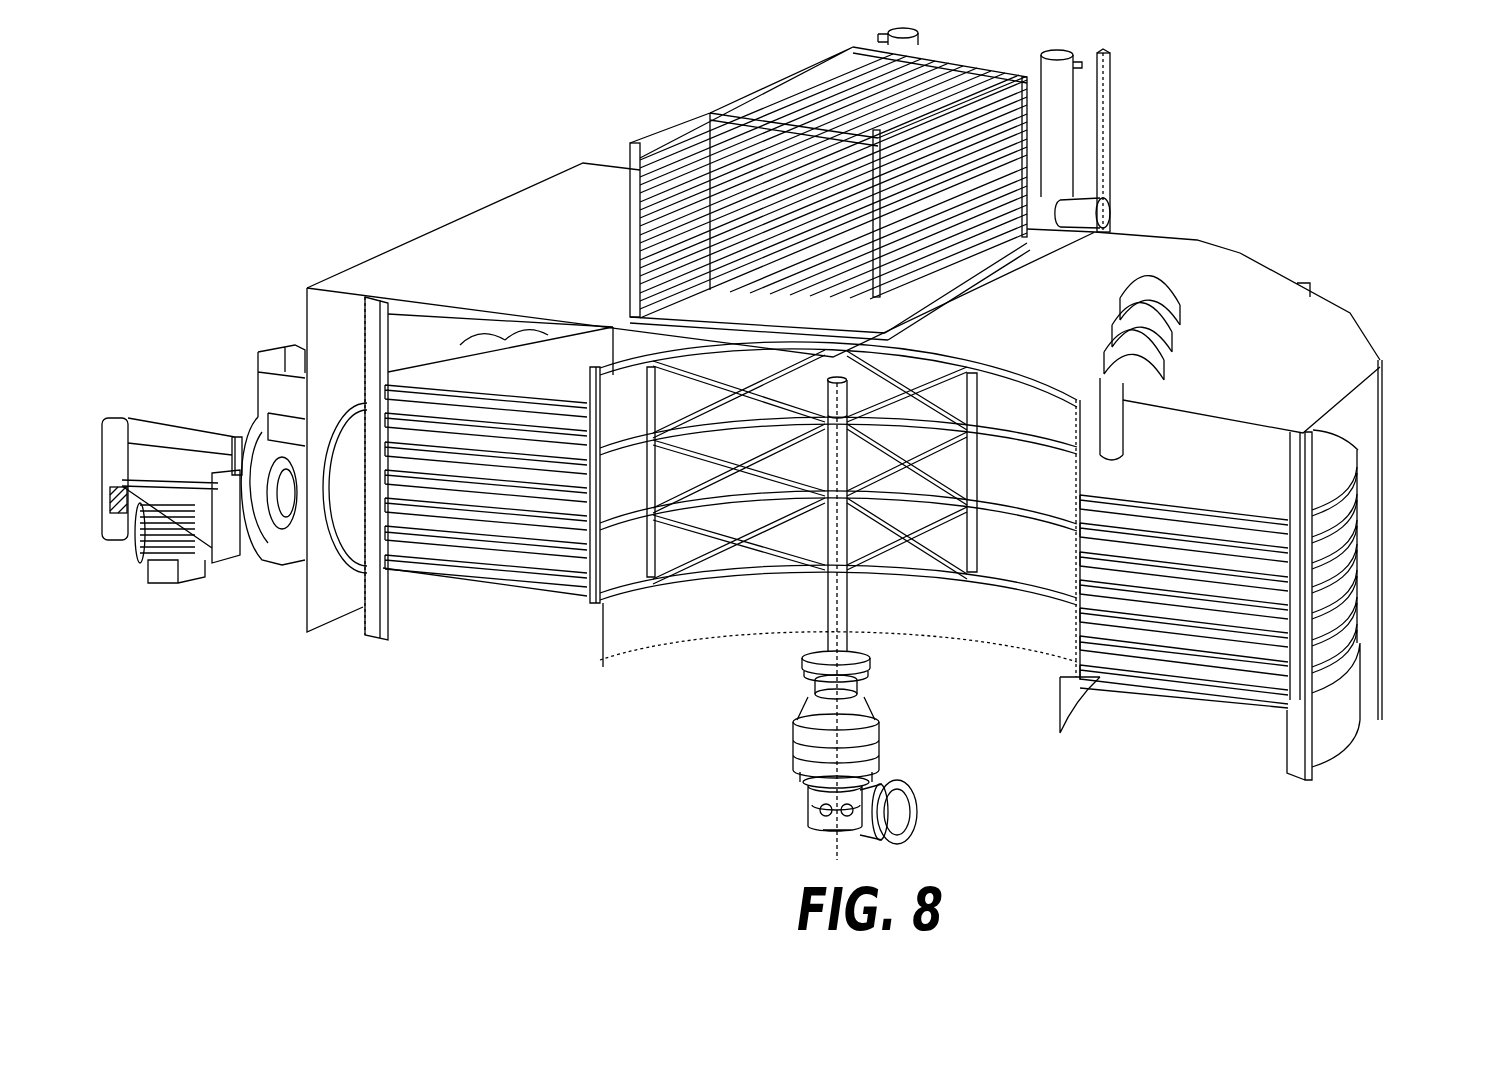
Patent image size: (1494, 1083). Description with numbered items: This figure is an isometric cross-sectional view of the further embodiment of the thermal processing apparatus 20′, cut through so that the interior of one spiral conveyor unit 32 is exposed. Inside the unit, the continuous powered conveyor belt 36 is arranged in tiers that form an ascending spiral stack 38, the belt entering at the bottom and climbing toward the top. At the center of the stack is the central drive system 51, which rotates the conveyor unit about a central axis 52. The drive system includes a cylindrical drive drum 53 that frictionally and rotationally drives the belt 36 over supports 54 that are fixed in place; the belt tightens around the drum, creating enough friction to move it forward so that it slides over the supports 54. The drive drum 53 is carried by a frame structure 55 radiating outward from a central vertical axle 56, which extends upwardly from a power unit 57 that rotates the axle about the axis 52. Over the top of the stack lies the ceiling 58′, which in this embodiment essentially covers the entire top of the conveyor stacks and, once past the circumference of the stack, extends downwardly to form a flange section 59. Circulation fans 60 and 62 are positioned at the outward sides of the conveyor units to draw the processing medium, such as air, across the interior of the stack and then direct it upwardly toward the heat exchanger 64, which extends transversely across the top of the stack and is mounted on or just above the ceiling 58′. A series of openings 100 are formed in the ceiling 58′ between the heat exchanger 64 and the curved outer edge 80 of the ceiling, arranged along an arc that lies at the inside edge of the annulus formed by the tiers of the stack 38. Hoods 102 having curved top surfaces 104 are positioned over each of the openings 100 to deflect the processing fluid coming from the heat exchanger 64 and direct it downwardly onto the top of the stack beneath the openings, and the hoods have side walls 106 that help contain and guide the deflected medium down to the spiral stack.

The thermal processing apparatus 20′ is at (425, 132).
The spiral conveyor unit 32 is at (463, 586).
The conveyor belt 36 is at (1245, 490).
The ascending spiral stack 38 is at (1165, 708).
The central drive system 51 is at (762, 725).
The central axis 52 is at (968, 605).
The drive drum 53 is at (705, 541).
The supports 54 is at (527, 546).
The frame structure 55 is at (665, 583).
The central vertical axle 56 is at (845, 635).
The power unit 57 is at (888, 742).
The ceiling 58′ is at (1212, 273).
The flange section 59 is at (325, 333).
The circulation fan 60 is at (268, 352).
The circulation fan 62 is at (168, 420).
The heat exchanger 64 is at (1022, 55).
The curved outer edge 80 is at (1368, 390).
The openings 100 is at (1150, 380).
The hoods 102 is at (1182, 324).
The curved top surfaces 104 is at (1137, 350).
The side walls 106 is at (1123, 300).